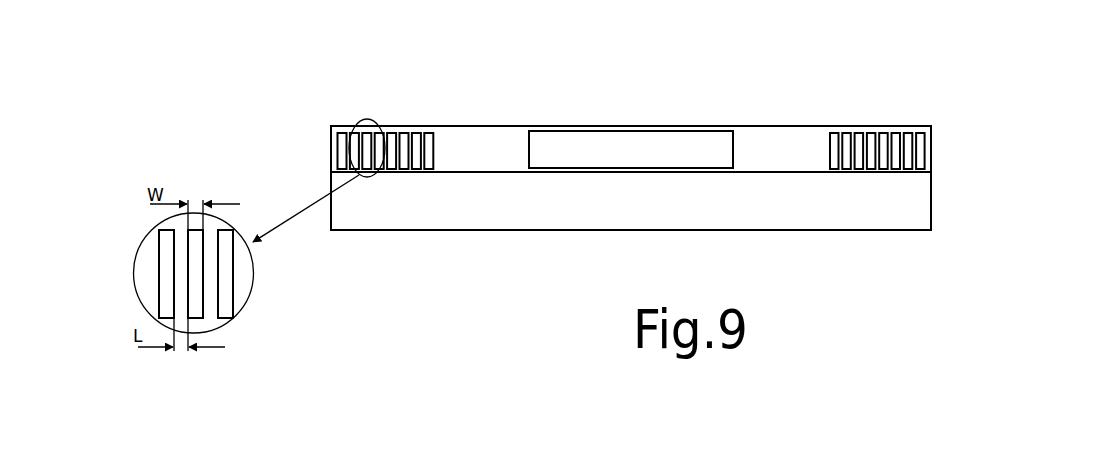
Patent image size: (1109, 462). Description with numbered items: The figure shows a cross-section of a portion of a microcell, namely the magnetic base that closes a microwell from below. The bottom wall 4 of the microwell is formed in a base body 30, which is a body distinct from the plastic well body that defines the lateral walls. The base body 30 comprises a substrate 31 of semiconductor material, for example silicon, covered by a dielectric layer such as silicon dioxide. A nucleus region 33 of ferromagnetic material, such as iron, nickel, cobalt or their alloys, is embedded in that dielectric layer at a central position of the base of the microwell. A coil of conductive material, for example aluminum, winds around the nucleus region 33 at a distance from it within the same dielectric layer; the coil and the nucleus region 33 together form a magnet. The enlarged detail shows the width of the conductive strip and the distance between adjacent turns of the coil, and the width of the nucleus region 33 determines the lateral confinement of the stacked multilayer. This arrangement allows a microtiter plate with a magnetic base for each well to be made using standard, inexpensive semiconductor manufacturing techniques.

The bottom wall 4 is at (421, 104).
The base body 30 is at (325, 172).
The substrate 31 is at (911, 224).
The nucleus region 33 is at (690, 145).